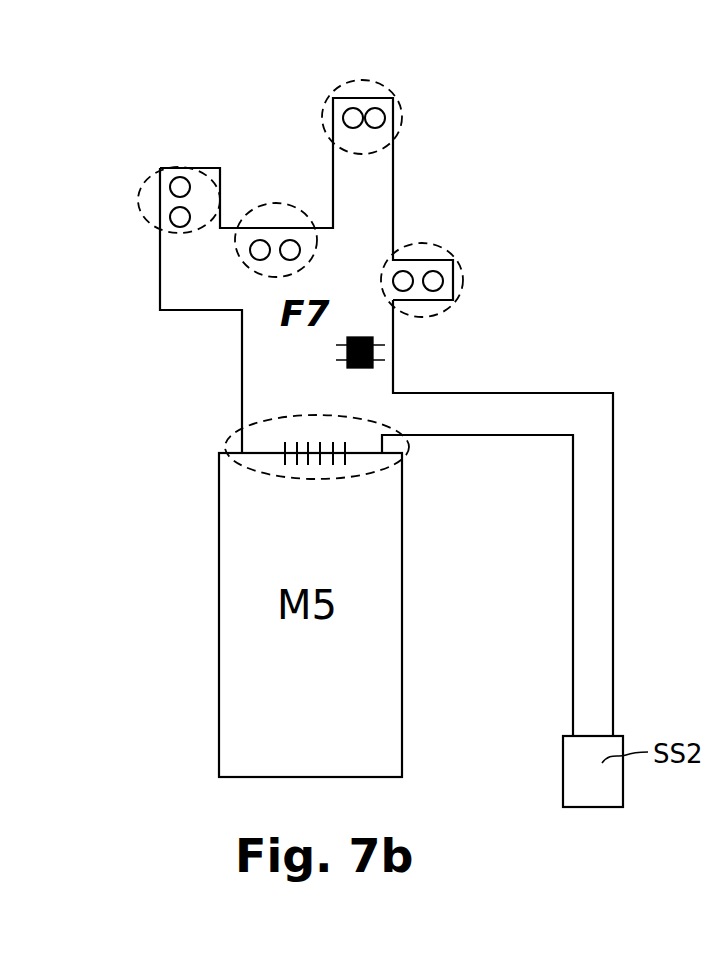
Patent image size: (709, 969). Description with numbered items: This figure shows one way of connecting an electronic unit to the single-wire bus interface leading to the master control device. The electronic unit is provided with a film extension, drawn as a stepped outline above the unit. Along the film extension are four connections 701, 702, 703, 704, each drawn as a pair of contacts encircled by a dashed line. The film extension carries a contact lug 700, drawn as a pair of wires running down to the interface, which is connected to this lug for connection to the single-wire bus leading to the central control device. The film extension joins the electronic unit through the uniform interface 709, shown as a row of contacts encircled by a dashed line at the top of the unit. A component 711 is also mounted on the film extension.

The contact lug 700 is at (605, 498).
The connection 701 is at (385, 80).
The connection 702 is at (176, 162).
The connection 703 is at (278, 204).
The connection 704 is at (450, 250).
The uniform interface 709 is at (220, 446).
The component 711 is at (373, 347).